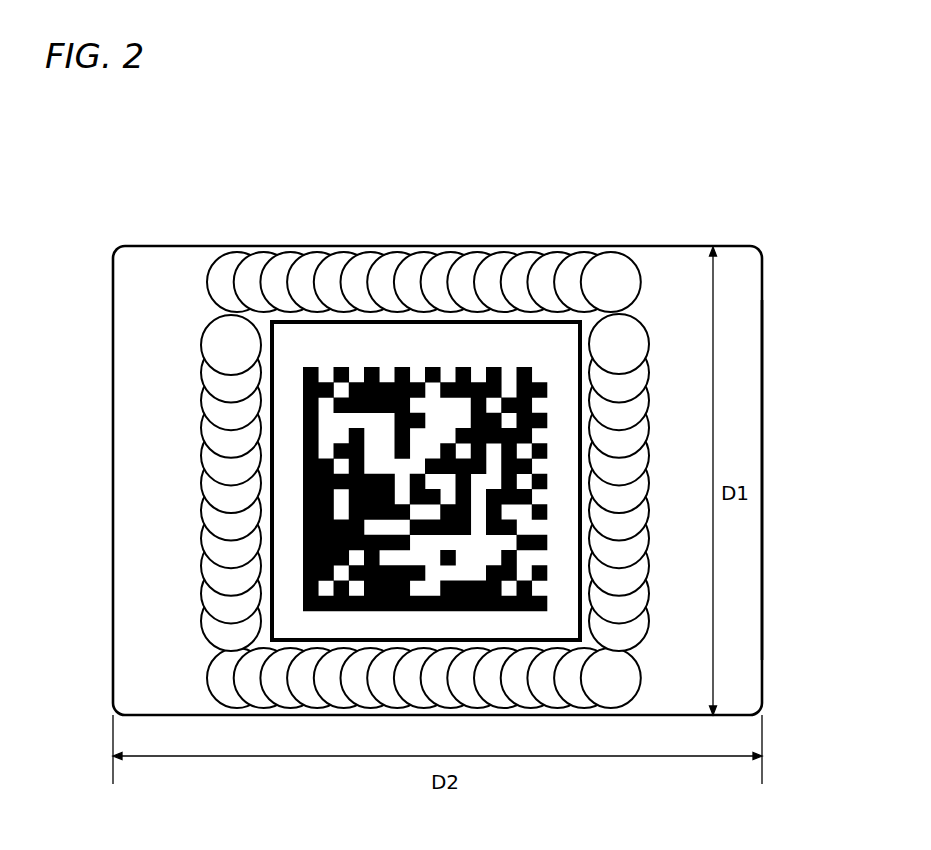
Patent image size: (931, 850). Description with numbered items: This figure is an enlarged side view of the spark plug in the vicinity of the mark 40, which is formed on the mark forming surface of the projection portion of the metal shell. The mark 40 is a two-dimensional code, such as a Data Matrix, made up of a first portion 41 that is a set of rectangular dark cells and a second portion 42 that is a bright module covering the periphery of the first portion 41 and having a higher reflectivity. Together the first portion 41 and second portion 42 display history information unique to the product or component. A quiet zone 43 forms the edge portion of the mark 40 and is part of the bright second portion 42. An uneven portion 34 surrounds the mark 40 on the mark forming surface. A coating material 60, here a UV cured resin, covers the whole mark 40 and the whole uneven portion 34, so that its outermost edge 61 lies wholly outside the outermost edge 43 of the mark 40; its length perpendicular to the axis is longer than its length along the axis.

The uneven portion 34 is at (420, 276).
The mark 40 is at (521, 342).
The first portion 41 is at (363, 367).
The second portion 42 is at (325, 357).
The quiet zone 43 is at (478, 317).
The coating material 60 is at (675, 277).
The outermost edge 61 is at (762, 283).